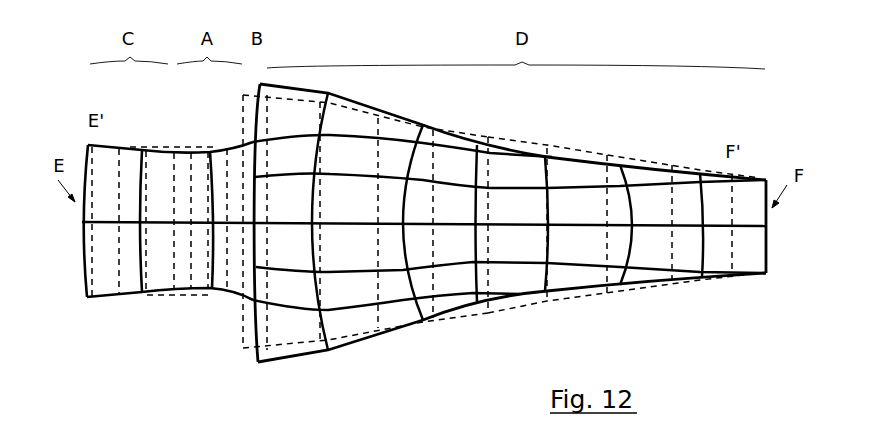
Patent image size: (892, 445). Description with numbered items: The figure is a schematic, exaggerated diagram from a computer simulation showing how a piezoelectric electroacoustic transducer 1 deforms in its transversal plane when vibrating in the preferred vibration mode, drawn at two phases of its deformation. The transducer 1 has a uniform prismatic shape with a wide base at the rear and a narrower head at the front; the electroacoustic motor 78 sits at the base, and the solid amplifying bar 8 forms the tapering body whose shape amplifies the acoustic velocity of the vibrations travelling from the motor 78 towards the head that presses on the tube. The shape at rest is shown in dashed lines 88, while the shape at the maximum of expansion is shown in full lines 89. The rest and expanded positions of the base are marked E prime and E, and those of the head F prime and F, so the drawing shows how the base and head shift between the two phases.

The electroacoustic transducer 1 is at (392, 100).
The solid amplifying bar 8 is at (548, 133).
The electroacoustic motor 78 is at (177, 310).
The dashed lines 88 is at (512, 308).
The full lines 89 is at (360, 345).